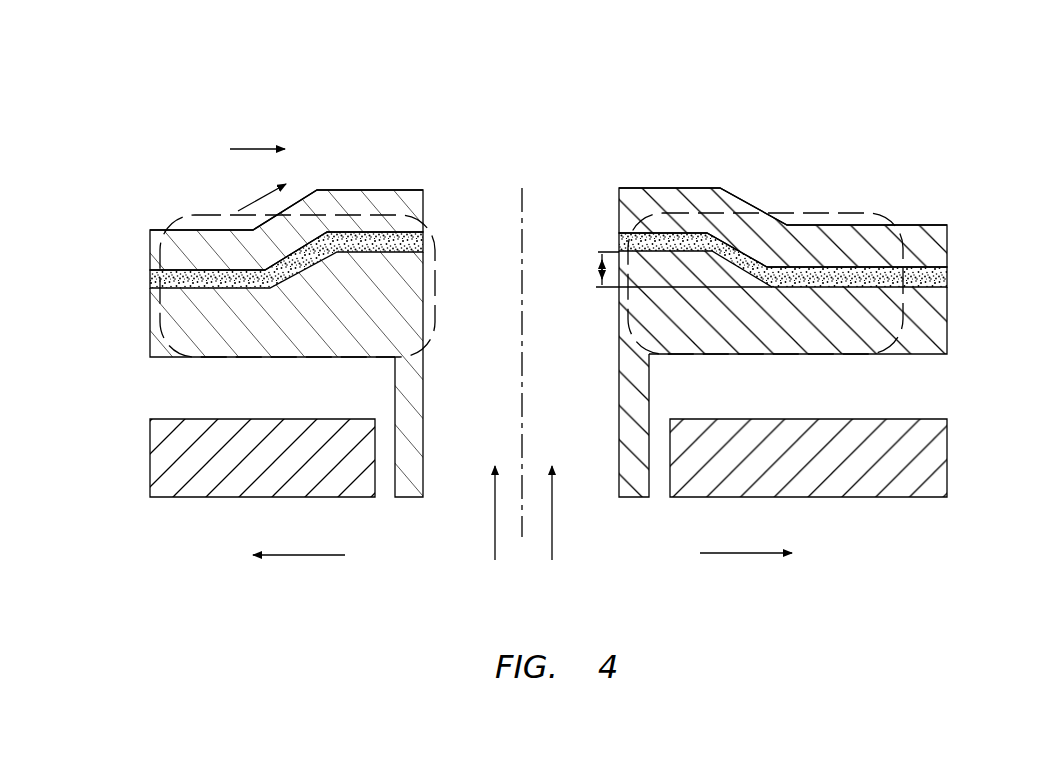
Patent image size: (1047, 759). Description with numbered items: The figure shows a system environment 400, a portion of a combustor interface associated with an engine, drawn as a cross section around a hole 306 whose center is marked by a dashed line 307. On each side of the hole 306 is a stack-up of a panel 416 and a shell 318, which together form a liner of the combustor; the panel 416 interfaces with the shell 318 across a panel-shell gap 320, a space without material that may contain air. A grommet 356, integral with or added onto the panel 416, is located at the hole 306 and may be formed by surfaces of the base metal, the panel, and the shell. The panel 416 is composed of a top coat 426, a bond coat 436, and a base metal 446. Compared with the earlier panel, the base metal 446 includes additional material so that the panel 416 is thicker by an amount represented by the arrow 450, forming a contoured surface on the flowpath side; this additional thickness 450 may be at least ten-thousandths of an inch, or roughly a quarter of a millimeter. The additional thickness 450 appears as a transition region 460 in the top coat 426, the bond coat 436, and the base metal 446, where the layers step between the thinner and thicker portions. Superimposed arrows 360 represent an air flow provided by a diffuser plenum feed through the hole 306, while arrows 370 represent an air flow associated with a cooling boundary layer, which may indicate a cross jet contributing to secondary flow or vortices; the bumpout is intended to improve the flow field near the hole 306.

The system environment 400 is at (966, 96).
The hole 306 is at (568, 215).
The dashed line 307 is at (520, 203).
The shell 318 is at (153, 462).
The panel-shell gap 320 is at (178, 380).
The grommet 356 is at (400, 389).
The arrows 360 is at (495, 551).
The arrows 370 is at (258, 192).
The panel 416 is at (213, 218).
The top coat 426 is at (150, 232).
The bond coat 436 is at (150, 281).
The base metal 446 is at (150, 310).
The additional thickness 450 is at (598, 271).
The transition region 460 is at (312, 252).